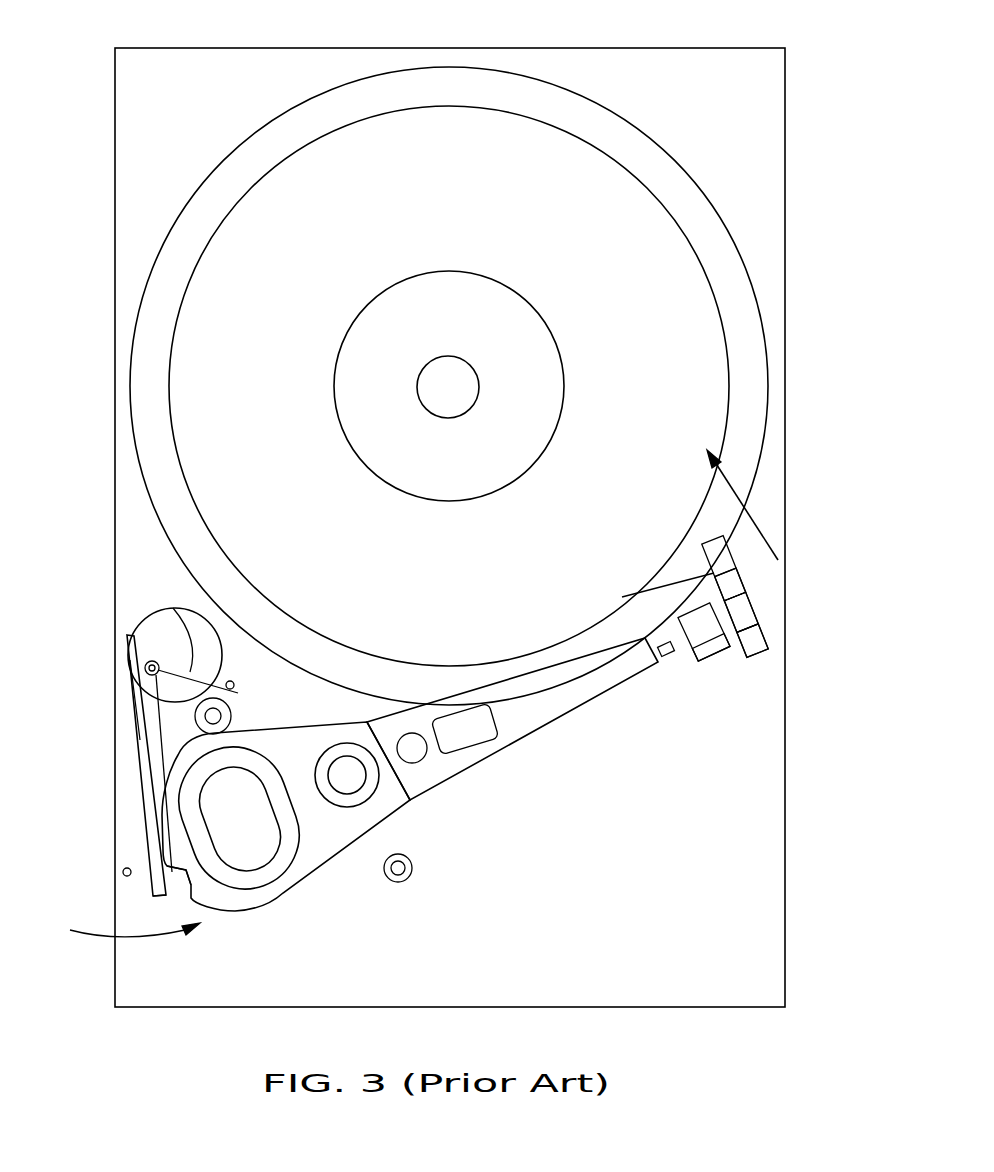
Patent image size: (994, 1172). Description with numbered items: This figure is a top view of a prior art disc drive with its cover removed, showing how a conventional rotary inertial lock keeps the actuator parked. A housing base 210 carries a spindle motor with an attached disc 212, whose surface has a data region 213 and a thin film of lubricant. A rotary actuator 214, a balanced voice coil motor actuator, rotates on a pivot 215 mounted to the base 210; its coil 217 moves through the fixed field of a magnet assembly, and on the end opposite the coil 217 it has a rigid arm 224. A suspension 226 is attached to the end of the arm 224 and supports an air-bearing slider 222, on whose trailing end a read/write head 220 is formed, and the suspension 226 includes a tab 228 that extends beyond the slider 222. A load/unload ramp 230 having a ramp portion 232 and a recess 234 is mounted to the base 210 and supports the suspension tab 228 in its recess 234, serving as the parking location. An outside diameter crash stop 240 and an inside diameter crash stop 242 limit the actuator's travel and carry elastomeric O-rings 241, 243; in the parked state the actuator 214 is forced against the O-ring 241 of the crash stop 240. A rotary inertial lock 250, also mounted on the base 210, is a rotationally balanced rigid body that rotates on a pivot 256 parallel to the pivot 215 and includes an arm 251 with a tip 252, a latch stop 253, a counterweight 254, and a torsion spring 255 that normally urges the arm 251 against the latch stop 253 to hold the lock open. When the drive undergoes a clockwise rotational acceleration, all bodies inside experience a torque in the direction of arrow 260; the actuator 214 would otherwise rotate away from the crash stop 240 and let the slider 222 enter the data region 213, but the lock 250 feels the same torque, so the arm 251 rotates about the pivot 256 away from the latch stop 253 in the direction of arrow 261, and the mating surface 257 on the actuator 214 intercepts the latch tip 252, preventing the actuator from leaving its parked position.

The housing base 210 is at (785, 969).
The disc 212 is at (743, 337).
The data region 213 is at (673, 267).
The rotary actuator 214 is at (250, 910).
The pivot 215 is at (350, 783).
The coil 217 is at (233, 880).
The read/write head 220 is at (693, 648).
The air-bearing slider 222 is at (722, 653).
The rigid arm 224 is at (532, 718).
The suspension 226 is at (662, 660).
The tab 228 is at (763, 617).
The load/unload ramp 230 is at (763, 638).
The ramp portion 232 is at (727, 557).
The recess 234 is at (745, 593).
The outside diameter crash stop 240 is at (203, 727).
The O-ring 241 is at (200, 719).
The inside diameter crash stop 242 is at (398, 882).
The O-ring 243 is at (415, 867).
The rotary inertial lock 250 is at (128, 645).
The arm 251 is at (148, 813).
The tip 252 is at (173, 887).
The latch stop 253 is at (123, 873).
The counterweight 254 is at (150, 627).
The torsion spring 255 is at (168, 610).
The pivot 256 is at (146, 671).
The mating surface 257 is at (191, 885).
The arrow 260 is at (723, 553).
The arrow 261 is at (102, 940).